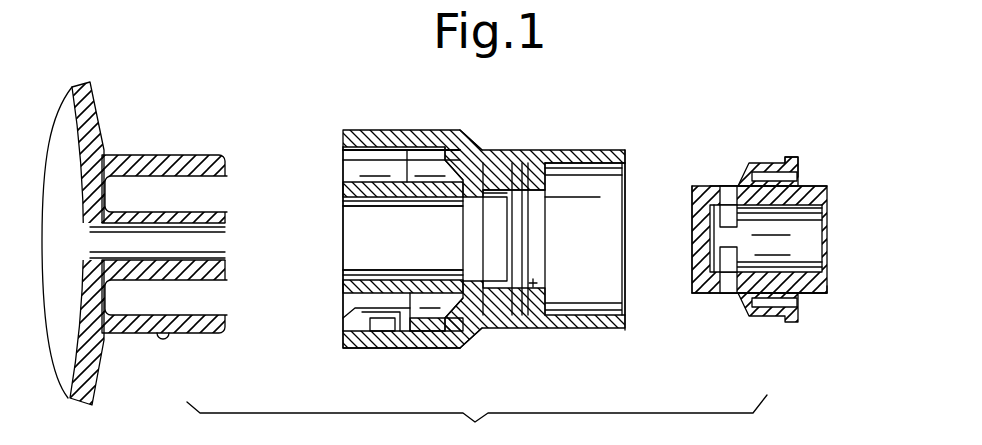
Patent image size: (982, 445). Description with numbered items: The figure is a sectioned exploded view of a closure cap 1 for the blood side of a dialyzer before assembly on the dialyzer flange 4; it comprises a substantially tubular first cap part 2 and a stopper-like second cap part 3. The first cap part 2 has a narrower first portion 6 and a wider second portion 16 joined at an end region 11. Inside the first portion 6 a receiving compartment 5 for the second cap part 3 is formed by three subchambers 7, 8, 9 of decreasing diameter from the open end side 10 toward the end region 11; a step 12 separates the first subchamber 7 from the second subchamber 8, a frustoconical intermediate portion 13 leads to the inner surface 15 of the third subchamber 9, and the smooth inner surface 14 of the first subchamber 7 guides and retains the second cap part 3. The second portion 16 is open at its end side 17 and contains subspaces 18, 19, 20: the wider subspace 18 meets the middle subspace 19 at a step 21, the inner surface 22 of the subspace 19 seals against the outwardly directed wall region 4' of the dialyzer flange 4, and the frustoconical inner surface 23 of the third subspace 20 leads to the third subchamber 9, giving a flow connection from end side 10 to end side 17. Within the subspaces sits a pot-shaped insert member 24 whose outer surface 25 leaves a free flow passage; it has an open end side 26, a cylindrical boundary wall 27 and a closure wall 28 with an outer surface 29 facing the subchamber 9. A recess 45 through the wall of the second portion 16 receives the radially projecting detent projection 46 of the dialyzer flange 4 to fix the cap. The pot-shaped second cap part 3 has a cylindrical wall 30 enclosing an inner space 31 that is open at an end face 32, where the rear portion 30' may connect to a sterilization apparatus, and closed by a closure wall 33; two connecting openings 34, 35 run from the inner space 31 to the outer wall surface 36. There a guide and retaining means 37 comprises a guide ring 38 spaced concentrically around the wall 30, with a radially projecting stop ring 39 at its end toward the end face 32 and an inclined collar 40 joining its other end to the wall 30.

The closure cap 1 is at (603, 148).
The first cap part 2 is at (471, 134).
The second cap part 3 is at (768, 163).
The dialyzer flange 4 is at (95, 243).
The wall region 4' is at (151, 216).
The receiving compartment 5 is at (578, 255).
The first portion 6 is at (583, 318).
The first subchamber 7 is at (598, 203).
The second subchamber 8 is at (535, 305).
The third subchamber 9 is at (490, 260).
The open end side 10 is at (627, 328).
The end region 11 is at (467, 330).
The step 12 is at (560, 163).
The frustoconical intermediate portion 13 is at (516, 330).
The inner surface 14 is at (613, 169).
The inner surface 15 is at (514, 188).
The second portion 16 is at (343, 345).
The end side 17 is at (343, 150).
The subspace 18 is at (362, 138).
The middle subspace 19 is at (437, 152).
The third subspace 20 is at (470, 175).
The step 21 is at (392, 142).
The inner surface 22 is at (425, 146).
The frustoconical inner surface 23 is at (428, 325).
The insert member 24 is at (390, 205).
The outer surface 25 is at (347, 178).
The open end side 26 is at (347, 290).
The boundary wall 27 is at (347, 278).
The closure wall 28 is at (343, 237).
The outer surface 29 is at (486, 330).
The wall 30 is at (791, 188).
The rear portion 30' is at (837, 317).
The inner space 31 is at (827, 224).
The end face 32 is at (828, 287).
The closure wall 33 is at (700, 245).
The connecting opening 34 is at (723, 200).
The connecting opening 35 is at (731, 268).
The outer wall surface 36 is at (705, 295).
The guide and retaining means 37 is at (775, 318).
The guide ring 38 is at (778, 168).
The stop ring 39 is at (796, 164).
The collar 40 is at (750, 170).
The recess 45 is at (380, 332).
The detent projection 46 is at (165, 342).